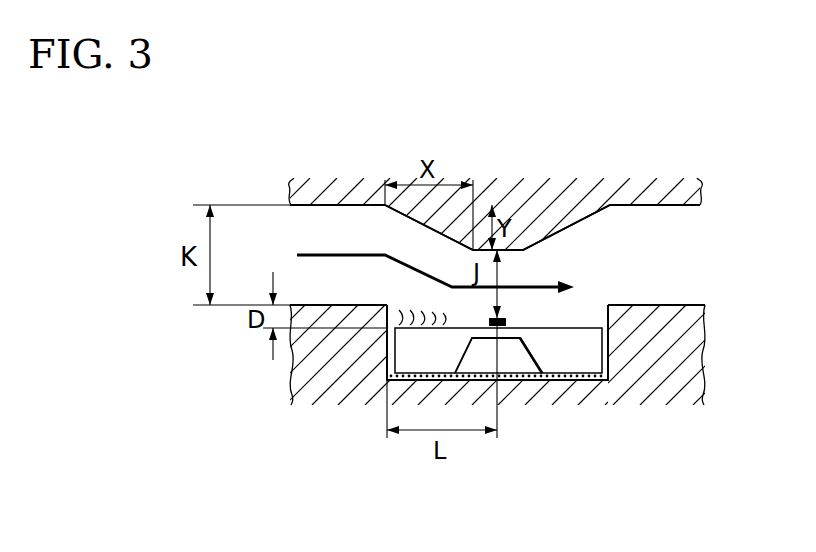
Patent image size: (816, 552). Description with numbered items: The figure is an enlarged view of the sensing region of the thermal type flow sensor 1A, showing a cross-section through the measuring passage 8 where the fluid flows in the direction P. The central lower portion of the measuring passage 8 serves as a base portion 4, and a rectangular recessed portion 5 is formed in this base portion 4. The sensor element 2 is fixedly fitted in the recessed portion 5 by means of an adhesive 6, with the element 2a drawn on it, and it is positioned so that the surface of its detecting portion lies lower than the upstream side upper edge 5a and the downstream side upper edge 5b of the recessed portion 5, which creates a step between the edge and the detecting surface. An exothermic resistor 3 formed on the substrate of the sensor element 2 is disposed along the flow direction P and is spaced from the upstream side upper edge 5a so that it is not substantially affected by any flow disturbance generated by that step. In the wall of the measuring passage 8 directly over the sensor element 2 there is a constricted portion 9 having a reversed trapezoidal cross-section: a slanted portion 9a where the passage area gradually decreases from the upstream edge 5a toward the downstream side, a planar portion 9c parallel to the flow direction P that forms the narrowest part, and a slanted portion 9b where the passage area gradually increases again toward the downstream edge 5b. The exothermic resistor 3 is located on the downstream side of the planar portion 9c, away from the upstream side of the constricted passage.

The thermal type flow sensor 1A is at (256, 133).
The measuring passage 8 is at (347, 205).
The constricted portion 9 is at (531, 217).
The slanted portion 9a is at (425, 239).
The slanted portion 9b is at (573, 224).
The planar portion 9c is at (511, 252).
The base portion 4 is at (291, 391).
The recessed portion 5 is at (541, 380).
The upstream side upper edge 5a is at (387, 305).
The downstream side upper edge 5b is at (611, 305).
The adhesive 6 is at (608, 380).
The sensor element 2 is at (557, 380).
The element mounted on substrate 2a is at (526, 328).
The exothermic resistor 3 is at (490, 322).
The direction of fluid flow P is at (320, 252).